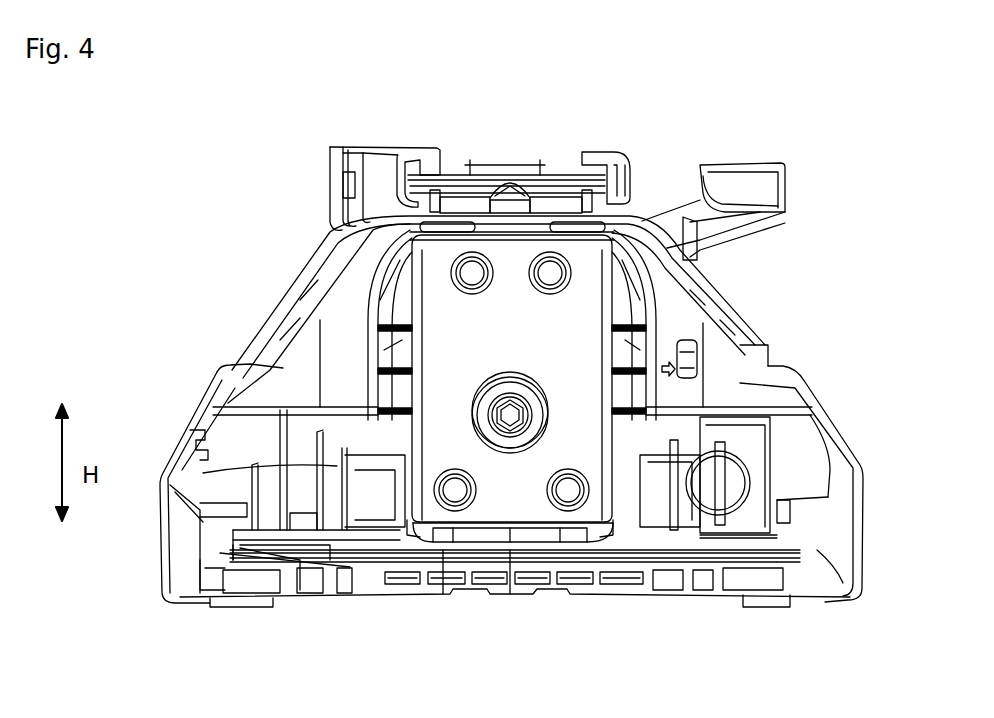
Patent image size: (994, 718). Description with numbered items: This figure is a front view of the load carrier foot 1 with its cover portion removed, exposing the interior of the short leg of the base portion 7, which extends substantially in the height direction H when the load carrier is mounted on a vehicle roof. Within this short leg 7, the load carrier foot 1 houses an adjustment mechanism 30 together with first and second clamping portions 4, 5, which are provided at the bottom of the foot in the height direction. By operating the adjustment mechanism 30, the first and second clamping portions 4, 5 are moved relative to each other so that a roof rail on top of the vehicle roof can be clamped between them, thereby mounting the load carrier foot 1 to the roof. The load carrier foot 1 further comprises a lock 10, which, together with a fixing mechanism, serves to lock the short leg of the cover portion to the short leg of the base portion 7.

The load carrier foot 1 is at (148, 352).
The first clamping portion 4 is at (428, 510).
The second clamping portion 5 is at (340, 550).
The short leg of the base portion 7 is at (295, 338).
The lock 10 is at (718, 485).
The adjustment mechanism 30 is at (510, 425).